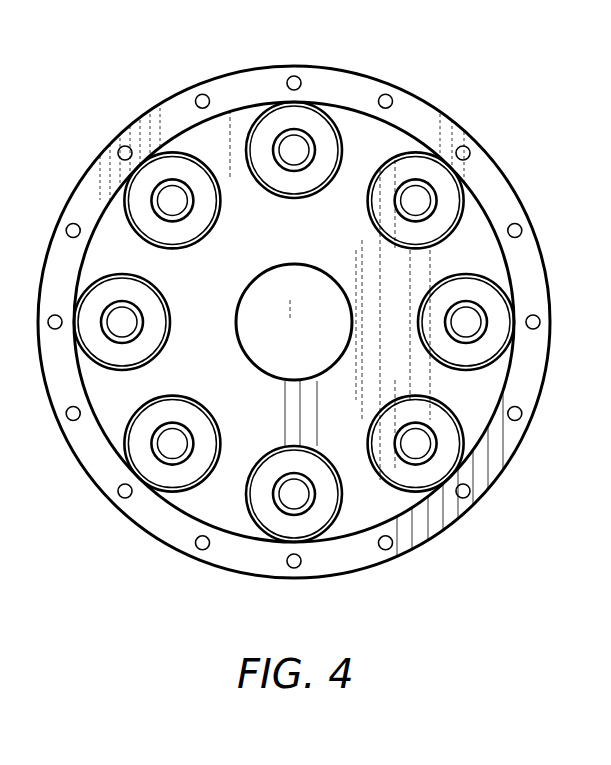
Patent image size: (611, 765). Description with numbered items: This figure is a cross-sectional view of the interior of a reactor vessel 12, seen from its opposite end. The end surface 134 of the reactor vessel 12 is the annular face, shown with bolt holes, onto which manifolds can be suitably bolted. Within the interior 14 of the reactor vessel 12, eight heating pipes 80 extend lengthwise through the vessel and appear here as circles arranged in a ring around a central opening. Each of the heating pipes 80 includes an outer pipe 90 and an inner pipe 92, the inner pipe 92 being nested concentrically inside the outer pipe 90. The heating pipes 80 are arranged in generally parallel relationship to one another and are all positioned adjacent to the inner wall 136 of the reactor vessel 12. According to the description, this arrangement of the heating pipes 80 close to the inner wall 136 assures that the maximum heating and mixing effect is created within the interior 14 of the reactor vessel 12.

The reactor vessel 12 is at (433, 105).
The interior 14 is at (497, 263).
The heating pipes 80 is at (165, 297).
The outer pipe 90 is at (220, 218).
The inner pipe 92 is at (178, 183).
The end surface 134 is at (325, 80).
The inner wall 136 is at (403, 132).